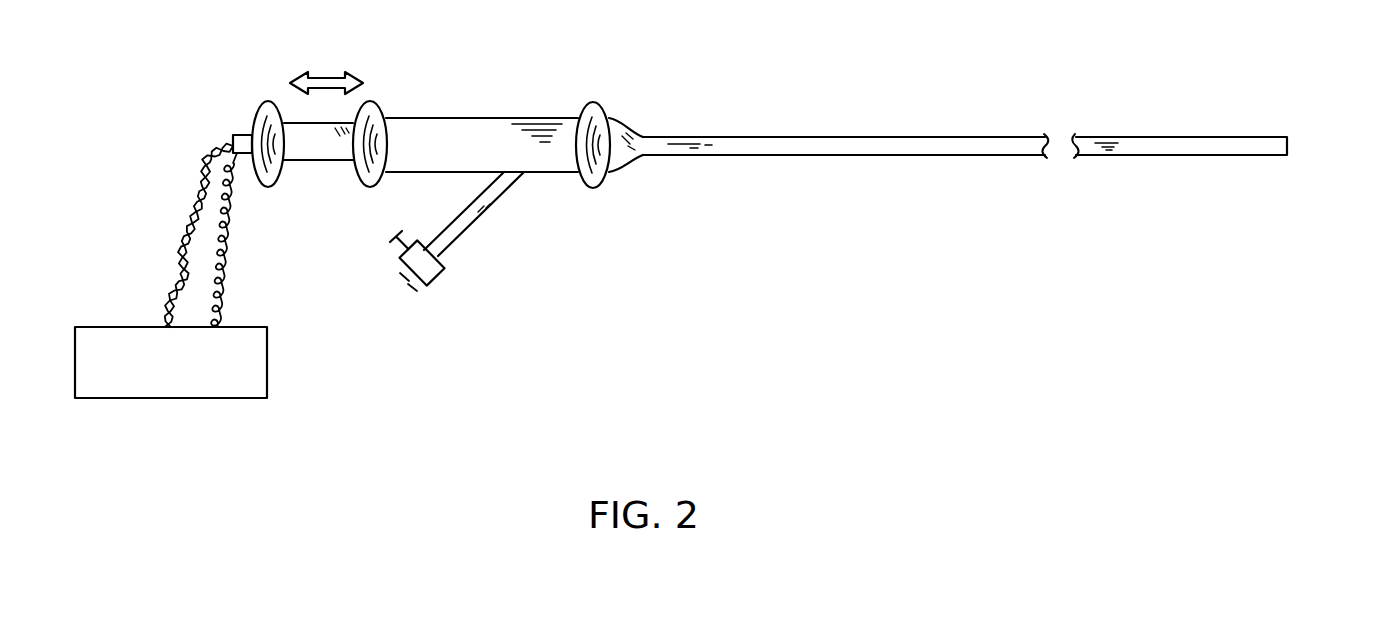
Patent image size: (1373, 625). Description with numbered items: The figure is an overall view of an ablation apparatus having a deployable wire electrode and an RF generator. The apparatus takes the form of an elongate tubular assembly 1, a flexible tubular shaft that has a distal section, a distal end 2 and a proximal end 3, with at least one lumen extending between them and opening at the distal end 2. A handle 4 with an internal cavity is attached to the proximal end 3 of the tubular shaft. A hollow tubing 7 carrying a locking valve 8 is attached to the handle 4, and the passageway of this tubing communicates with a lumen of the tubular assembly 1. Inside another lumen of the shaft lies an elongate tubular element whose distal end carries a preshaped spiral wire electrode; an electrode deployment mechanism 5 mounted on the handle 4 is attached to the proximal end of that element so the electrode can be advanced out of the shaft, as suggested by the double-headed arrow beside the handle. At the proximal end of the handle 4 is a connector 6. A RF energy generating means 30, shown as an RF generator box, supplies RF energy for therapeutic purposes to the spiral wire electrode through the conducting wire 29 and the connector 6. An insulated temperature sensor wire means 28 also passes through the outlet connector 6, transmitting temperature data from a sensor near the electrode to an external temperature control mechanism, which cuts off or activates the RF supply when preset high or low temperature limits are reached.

The elongate tubular assembly 1 is at (892, 135).
The distal end 2 is at (1292, 135).
The proximal end 3 is at (647, 137).
The handle 4 is at (477, 115).
The electrode deployment mechanism 5 is at (310, 170).
The connector 6 is at (228, 128).
The hollow tubing 7 is at (477, 230).
The locking valve 8 is at (432, 295).
The insulated temperature sensor wire means 28 is at (228, 290).
The conducting wire 29 is at (183, 222).
The RF energy generating means 30 is at (120, 402).